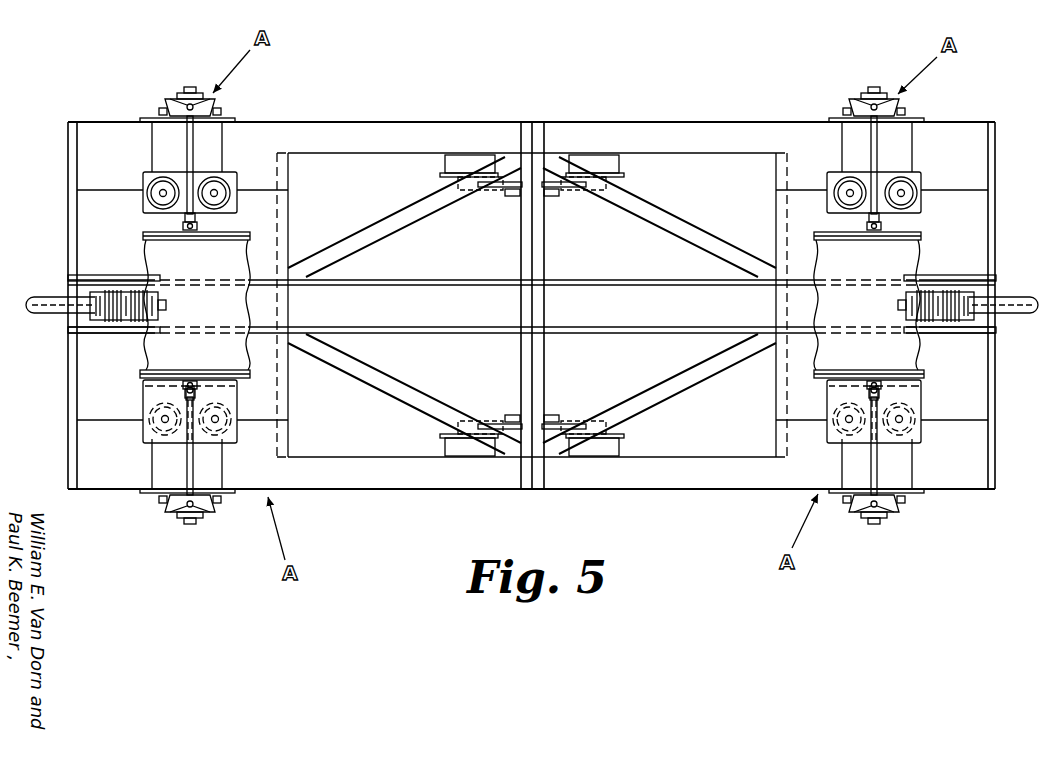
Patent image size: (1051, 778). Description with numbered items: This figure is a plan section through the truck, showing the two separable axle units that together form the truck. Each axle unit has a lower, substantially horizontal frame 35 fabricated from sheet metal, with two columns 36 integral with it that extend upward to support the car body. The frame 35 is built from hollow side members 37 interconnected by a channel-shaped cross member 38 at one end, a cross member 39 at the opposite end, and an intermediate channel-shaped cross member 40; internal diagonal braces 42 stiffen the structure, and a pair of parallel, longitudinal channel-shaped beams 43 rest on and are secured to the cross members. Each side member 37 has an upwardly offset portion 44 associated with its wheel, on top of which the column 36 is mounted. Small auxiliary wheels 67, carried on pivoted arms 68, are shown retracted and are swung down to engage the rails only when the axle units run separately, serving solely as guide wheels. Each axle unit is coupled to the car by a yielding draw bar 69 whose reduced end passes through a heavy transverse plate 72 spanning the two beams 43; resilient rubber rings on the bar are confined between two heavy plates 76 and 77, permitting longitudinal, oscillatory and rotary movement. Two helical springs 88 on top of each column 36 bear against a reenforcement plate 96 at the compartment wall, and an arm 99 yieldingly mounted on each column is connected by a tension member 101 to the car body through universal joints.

The lower horizontal frame 35 is at (366, 497).
The column 36 is at (210, 145).
The side member 37 is at (378, 133).
The channel-shaped cross member 38 is at (521, 244).
The cross member 39 is at (70, 230).
The intermediate channel-shaped cross member 40 is at (282, 210).
The internal diagonal brace 42 is at (378, 228).
The channel-shaped beam 43 is at (383, 284).
The upwardly offset portion 44 is at (138, 148).
The auxiliary wheel 67 is at (458, 163).
The pivoted arm 68 is at (492, 190).
The draw bar 69 is at (45, 300).
The transverse plate 72 is at (124, 323).
The plate 76 is at (147, 292).
The plate 77 is at (102, 290).
The helical spring 88 is at (148, 185).
The reenforcement plate 96 is at (152, 395).
The arm 99 is at (172, 97).
The tension member 101 is at (188, 142).